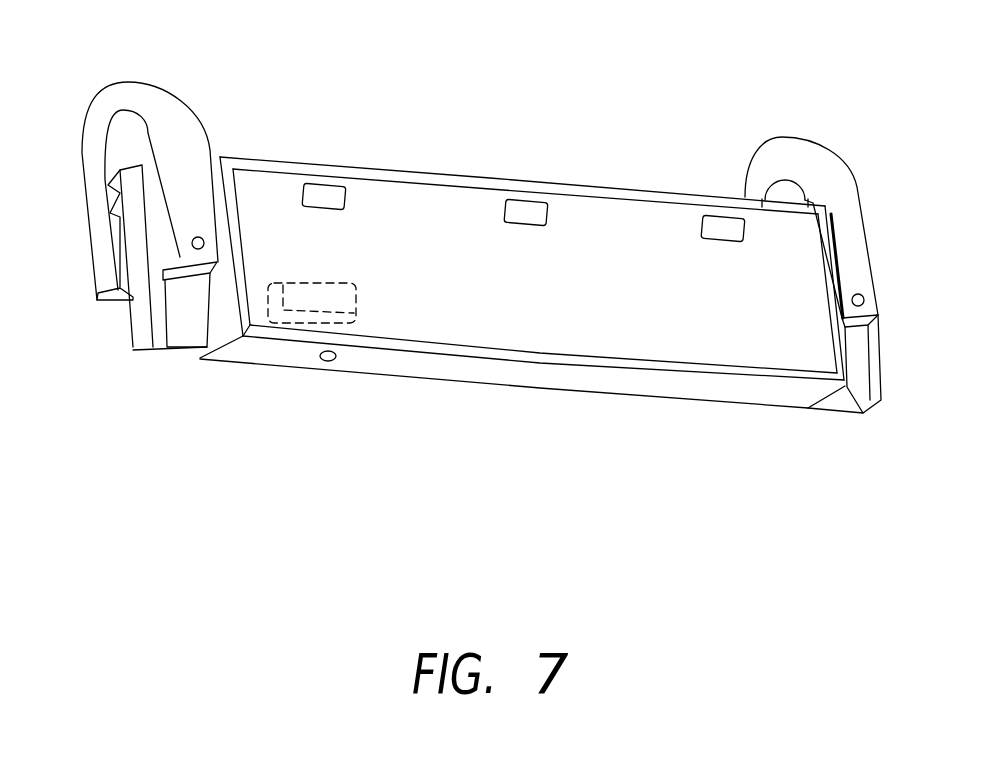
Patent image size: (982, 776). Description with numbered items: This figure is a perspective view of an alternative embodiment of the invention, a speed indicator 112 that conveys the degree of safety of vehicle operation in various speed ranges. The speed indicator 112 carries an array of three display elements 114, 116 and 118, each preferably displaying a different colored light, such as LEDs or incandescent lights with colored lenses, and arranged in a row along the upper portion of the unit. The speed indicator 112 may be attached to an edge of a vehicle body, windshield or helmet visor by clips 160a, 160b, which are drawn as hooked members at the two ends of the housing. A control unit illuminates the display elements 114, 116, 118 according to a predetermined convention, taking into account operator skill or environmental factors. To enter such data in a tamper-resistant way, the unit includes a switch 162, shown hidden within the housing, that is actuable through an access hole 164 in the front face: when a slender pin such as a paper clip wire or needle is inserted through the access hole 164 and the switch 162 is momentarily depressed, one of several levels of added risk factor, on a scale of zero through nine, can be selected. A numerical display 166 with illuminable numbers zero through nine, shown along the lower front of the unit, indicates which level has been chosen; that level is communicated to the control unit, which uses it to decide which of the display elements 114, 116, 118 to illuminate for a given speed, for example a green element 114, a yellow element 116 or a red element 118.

The speed indicator 112 is at (535, 120).
The display element 114 is at (327, 190).
The display element 116 is at (518, 207).
The display element 118 is at (727, 223).
The clip 160a is at (112, 250).
The clip 160b is at (822, 145).
The switch 162 is at (270, 313).
The access hole 164 is at (327, 362).
The numerical display 166 is at (573, 335).